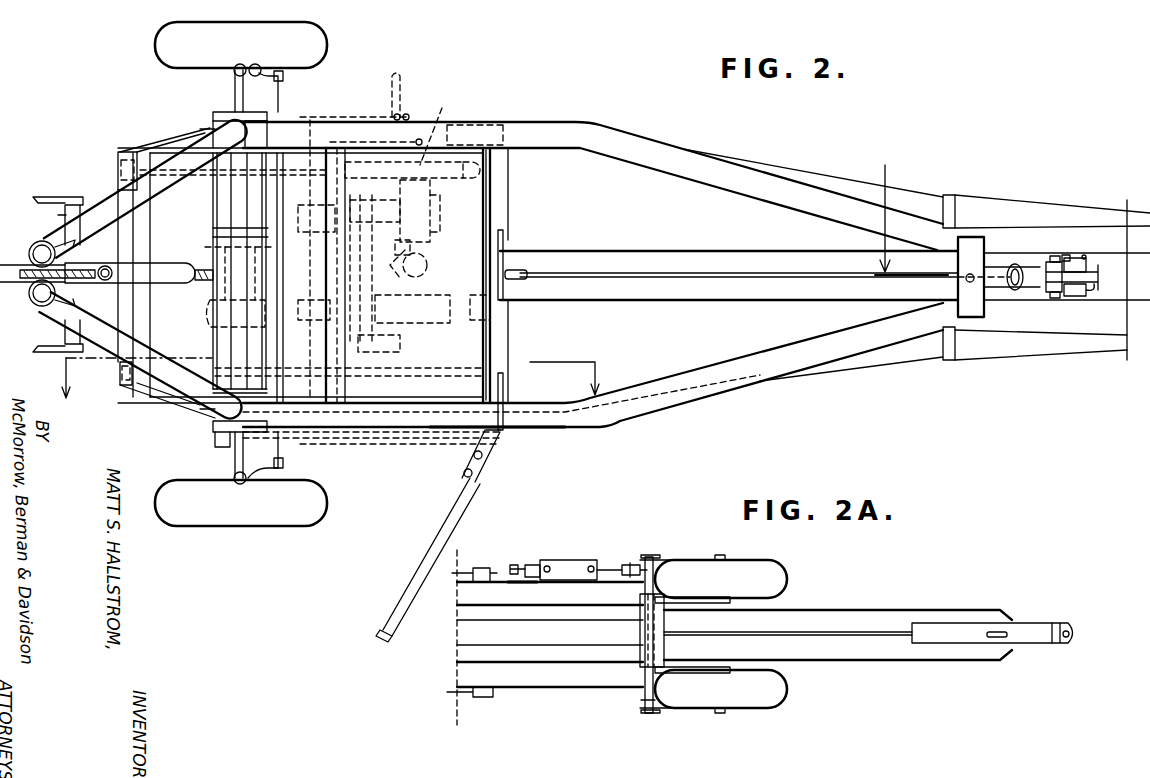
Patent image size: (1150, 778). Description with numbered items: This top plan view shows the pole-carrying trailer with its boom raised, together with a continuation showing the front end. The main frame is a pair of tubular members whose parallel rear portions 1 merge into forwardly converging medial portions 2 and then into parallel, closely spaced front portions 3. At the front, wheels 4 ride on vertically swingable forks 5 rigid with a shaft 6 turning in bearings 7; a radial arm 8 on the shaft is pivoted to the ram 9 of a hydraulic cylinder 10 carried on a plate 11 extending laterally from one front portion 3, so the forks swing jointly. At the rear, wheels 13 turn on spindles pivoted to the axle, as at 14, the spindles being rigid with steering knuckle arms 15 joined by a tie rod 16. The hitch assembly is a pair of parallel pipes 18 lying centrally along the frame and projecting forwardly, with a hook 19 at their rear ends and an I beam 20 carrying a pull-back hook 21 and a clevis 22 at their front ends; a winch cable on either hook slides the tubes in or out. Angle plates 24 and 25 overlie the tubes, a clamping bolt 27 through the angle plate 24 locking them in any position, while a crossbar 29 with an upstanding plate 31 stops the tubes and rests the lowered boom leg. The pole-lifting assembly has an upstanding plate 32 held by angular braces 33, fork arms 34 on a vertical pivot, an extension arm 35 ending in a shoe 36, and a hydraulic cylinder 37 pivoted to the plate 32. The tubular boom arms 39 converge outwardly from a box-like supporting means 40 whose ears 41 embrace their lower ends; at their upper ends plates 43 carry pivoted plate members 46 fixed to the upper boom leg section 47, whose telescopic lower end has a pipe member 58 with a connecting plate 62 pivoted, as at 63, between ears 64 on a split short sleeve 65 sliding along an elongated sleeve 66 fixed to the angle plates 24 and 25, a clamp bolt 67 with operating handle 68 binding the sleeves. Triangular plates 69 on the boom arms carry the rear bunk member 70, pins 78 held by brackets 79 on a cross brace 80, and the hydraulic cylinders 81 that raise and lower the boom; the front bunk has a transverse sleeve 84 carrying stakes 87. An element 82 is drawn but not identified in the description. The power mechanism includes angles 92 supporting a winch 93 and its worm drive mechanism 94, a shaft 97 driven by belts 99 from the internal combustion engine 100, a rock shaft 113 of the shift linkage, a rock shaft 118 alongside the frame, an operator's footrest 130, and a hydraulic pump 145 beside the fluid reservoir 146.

In FIG. 2, the rear portions 1 is at (558, 128).
In FIG. 2, the medial portions 2 is at (750, 185).
In FIG. 2, the front portions 3 is at (1010, 228).
In FIG. 2A, the front portions 3 is at (497, 582).
In FIG. 2, the front wheels 4 is at (336, 380).
In FIG. 2A, the front wheels 4 is at (778, 575).
In FIG. 2A, the fork 5 is at (690, 598).
In FIG. 2A, the shaft 6 is at (645, 705).
In FIG. 2, the bearings 7 is at (984, 209).
In FIG. 2A, the bearings 7 is at (643, 600).
In FIG. 2A, the radial arm 8 is at (632, 566).
In FIG. 2A, the piston or ram 9 is at (612, 568).
In FIG. 2A, the hydraulic cylinder 10 is at (570, 560).
In FIG. 2A, the plate 11 is at (525, 563).
In FIG. 2, the rear wheels 13 is at (323, 52).
In FIG. 2, the spindle pivot 14 is at (235, 67).
In FIG. 2, the steering knuckle arms 15 is at (262, 72).
In FIG. 2, the tie rod 16 is at (280, 210).
In FIG. 2, the hitch tubes 18 is at (708, 253).
In FIG. 2A, the hitch tubes 18 is at (912, 612).
In FIG. 2, the hook 19 is at (525, 268).
In FIG. 2A, the I beam 20 is at (950, 628).
In FIG. 2A, the pull-back hook 21 is at (1005, 630).
In FIG. 2A, the clevis 22 is at (1060, 645).
In FIG. 2, the angle plate 24 is at (970, 237).
In FIG. 2A, the angle plate 25 is at (668, 622).
In FIG. 2, the clamping bolt 27 is at (962, 284).
In FIG. 2, the crossbar 29 is at (511, 187).
In FIG. 2, the upstanding plate 31 is at (505, 240).
In FIG. 2, the upstanding plate 32 is at (507, 378).
In FIG. 2, the angular braces 33 is at (445, 425).
In FIG. 2, the fork arms 34 is at (488, 470).
In FIG. 2, the extension arm 35 is at (432, 545).
In FIG. 2, the shoe 36 is at (376, 636).
In FIG. 2, the hydraulic cylinder 37 is at (465, 468).
In FIG. 2, the boom arms 39 is at (105, 200).
In FIG. 2, the supporting means 40 is at (255, 122).
In FIG. 2, the ears 41 is at (216, 111).
In FIG. 2, the plates 43 is at (12, 300).
In FIG. 2, the plate members 46 is at (98, 262).
In FIG. 2, the upper boom leg section 47 is at (138, 260).
In FIG. 2, the pipe member 58 is at (1028, 268).
In FIG. 2, the connecting plate 62 is at (1040, 286).
In FIG. 2, the pivotal connection 63 is at (1052, 294).
In FIG. 2, the ears 64 is at (1045, 262).
In FIG. 2, the short sleeve 65 is at (1076, 296).
In FIG. 2, the elongated sleeve 66 is at (1110, 270).
In FIG. 2A, the elongated sleeve 66 is at (505, 622).
In FIG. 2, the clamp bolt 67 is at (1090, 296).
In FIG. 2, the operating handle 68 is at (1078, 258).
In FIG. 2, the triangular supporting plates 69 is at (168, 148).
In FIG. 2, the rear bunk member 70 is at (150, 214).
In FIG. 2, the pins 78 is at (120, 156).
In FIG. 2, the brackets 79 is at (129, 274).
In FIG. 2, the cross brace 80 is at (137, 234).
In FIG. 2, the hydraulic cylinders 81 is at (380, 385).
In FIG. 2, the post 82 is at (483, 252).
In FIG. 2, the sleeve 84 is at (58, 216).
In FIG. 2, the stakes 87 is at (54, 197).
In FIG. 2, the angles 92 is at (245, 196).
In FIG. 2, the winch 93 is at (205, 257).
In FIG. 2, the worm drive mechanism 94 is at (205, 311).
In FIG. 2, the shaft 97 is at (318, 275).
In FIG. 2, the belts 99 is at (397, 243).
In FIG. 2, the internal combustion engine 100 is at (432, 190).
In FIG. 2, the rock shaft 113 is at (308, 210).
In FIG. 2, the rock shaft 118 is at (343, 115).
In FIG. 2, the footrest 130 is at (403, 95).
In FIG. 2, the hydraulic pump 145 is at (400, 342).
In FIG. 2, the fluid reservoir 146 is at (428, 300).